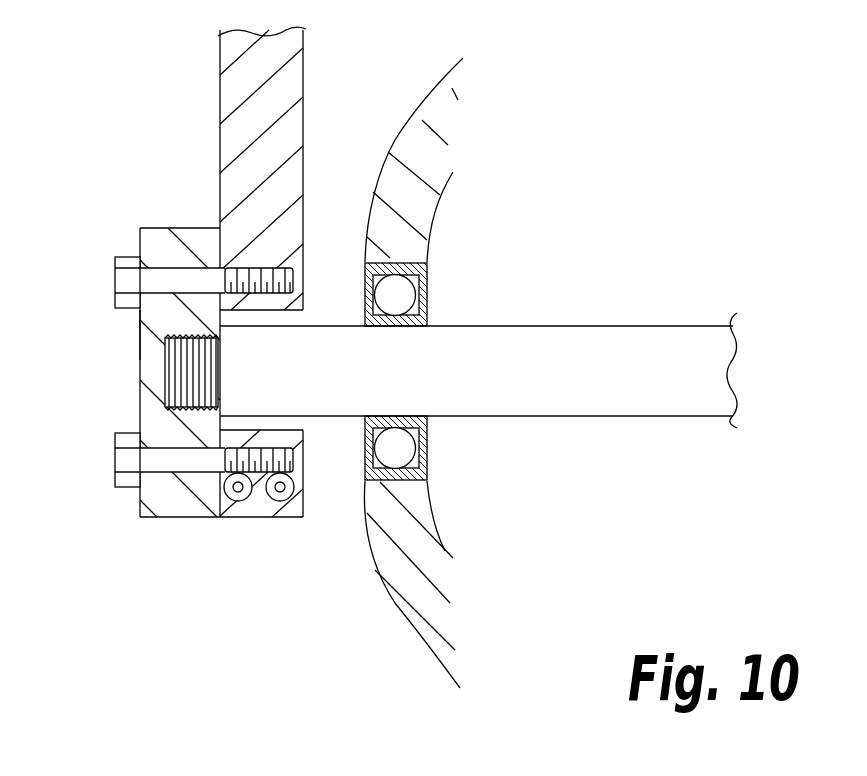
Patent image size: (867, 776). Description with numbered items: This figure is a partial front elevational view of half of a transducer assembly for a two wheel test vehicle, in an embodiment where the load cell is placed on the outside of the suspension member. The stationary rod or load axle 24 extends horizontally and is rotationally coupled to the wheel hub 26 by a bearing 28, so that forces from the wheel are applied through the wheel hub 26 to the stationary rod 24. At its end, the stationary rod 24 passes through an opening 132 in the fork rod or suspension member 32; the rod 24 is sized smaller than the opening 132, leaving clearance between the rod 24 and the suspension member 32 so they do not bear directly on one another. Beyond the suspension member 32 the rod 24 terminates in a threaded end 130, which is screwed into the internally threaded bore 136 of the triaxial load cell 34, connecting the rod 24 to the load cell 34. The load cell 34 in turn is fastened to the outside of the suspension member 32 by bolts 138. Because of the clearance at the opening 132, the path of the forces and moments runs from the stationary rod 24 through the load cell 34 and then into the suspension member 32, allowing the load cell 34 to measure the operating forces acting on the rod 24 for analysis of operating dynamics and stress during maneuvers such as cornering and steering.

The stationary rod 24 is at (498, 355).
The wheel hub 26 is at (391, 142).
The bearing 28 is at (428, 273).
The suspension member 32 is at (216, 100).
The load cell 34 is at (170, 226).
The threaded end 130 is at (150, 385).
The opening 132 is at (305, 320).
The internally threaded bore 136 is at (150, 333).
The bolt 138 is at (112, 265).